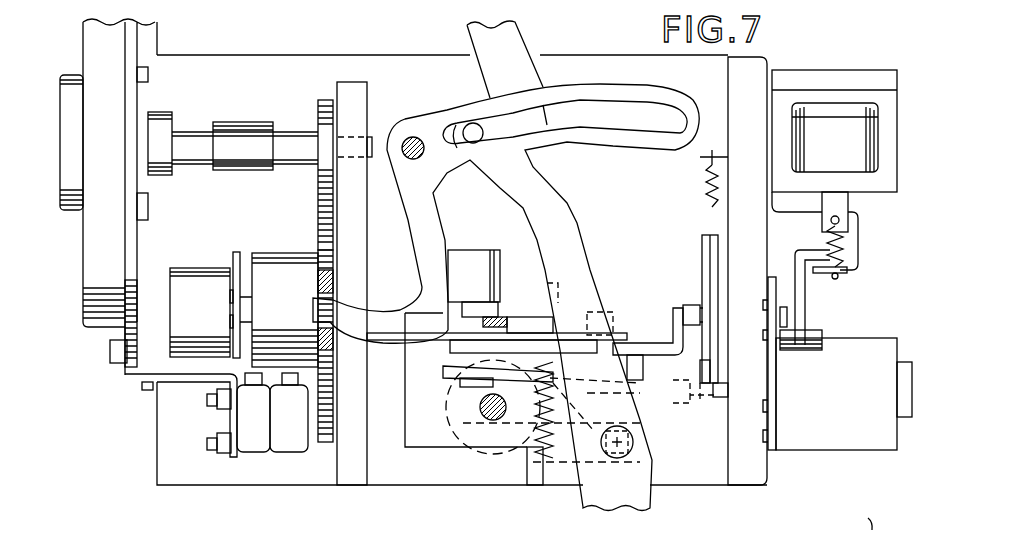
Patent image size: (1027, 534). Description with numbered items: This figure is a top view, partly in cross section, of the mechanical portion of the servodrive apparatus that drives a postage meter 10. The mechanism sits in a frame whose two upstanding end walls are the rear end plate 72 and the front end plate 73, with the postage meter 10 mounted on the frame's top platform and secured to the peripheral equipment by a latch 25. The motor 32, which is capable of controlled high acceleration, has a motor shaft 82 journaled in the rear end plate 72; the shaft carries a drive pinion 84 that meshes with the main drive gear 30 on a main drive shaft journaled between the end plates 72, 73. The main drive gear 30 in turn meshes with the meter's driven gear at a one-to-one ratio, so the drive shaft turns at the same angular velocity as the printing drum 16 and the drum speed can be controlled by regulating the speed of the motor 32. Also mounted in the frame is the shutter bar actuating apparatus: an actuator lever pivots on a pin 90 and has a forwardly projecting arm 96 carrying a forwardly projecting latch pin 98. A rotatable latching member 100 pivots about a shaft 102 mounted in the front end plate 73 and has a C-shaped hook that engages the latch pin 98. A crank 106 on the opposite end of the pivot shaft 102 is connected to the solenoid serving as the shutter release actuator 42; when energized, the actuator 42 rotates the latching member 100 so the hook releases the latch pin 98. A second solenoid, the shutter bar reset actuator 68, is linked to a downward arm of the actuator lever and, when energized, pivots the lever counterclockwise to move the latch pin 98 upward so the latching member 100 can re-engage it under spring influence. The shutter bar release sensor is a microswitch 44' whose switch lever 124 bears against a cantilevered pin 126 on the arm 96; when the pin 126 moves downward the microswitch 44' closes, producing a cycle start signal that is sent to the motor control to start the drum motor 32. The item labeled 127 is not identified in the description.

The postage meter 10 is at (442, 294).
The printing drum 16 is at (856, 519).
The latch 25 is at (467, 430).
The main drive gear 30 is at (333, 423).
The motor 32 is at (83, 262).
The shutter release actuator 42 is at (848, 78).
The microswitch 44' is at (525, 440).
The shutter bar reset actuator 68 is at (838, 440).
The rear end plate 72 is at (347, 478).
The front end plate 73 is at (752, 480).
The motor shaft 82 is at (192, 133).
The drive pinion 84 is at (318, 108).
The pin 90 is at (488, 310).
The forwardly projecting arm 96 is at (638, 347).
The latch pin 98 is at (695, 312).
The latching member 100 is at (700, 248).
The pivot shaft 102 is at (787, 322).
The crank 106 is at (780, 277).
The switch lever 124 is at (645, 455).
The cantilevered pin 126 is at (640, 378).
The lever rod 127 is at (520, 50).